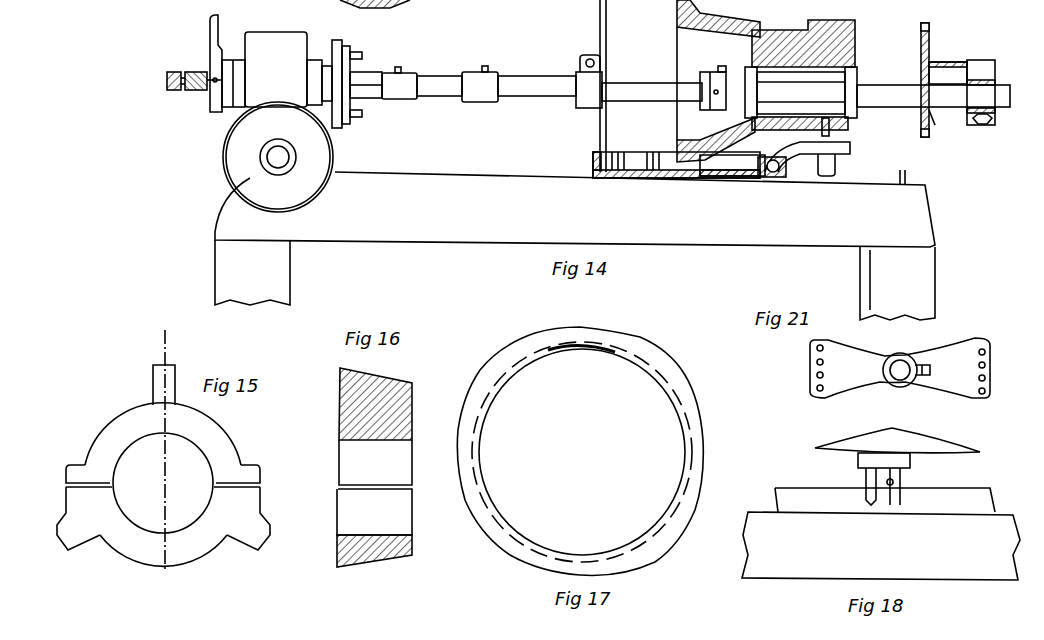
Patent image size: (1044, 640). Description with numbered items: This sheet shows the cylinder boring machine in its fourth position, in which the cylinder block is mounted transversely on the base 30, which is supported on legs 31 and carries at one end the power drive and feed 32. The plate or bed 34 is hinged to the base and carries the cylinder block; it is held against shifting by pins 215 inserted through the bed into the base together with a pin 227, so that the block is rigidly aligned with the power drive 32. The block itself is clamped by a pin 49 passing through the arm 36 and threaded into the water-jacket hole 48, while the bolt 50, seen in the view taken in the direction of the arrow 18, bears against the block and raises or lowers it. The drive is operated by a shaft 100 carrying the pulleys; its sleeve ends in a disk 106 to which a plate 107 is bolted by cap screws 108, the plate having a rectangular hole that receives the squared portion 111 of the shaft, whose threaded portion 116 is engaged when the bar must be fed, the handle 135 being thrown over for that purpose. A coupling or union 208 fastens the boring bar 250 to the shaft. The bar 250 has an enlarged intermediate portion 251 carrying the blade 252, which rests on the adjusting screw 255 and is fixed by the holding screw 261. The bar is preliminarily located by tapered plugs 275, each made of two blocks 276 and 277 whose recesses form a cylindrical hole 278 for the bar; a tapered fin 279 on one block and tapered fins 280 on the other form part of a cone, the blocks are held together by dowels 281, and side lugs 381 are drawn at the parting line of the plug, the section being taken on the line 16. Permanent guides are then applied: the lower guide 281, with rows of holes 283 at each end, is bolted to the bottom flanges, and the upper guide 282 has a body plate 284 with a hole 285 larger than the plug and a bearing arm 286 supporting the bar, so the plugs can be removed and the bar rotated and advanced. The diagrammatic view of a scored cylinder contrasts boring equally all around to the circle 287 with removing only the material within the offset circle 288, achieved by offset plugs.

In FIG. 15, the section line 16 is at (164, 446).
In FIG. 14, the arrow 18 is at (958, 162).
In FIG. 14, the base 30 is at (575, 245).
In FIG. 18, the base 30 is at (881, 546).
In FIG. 14, the legs 31 is at (887, 280).
In FIG. 14, the power drive and feed 32 is at (277, 69).
In FIG. 14, the plate or bed 34 is at (592, 160).
In FIG. 18, the plate or bed 34 is at (885, 500).
In FIG. 14, the arm 36 is at (850, 148).
In FIG. 18, the arm 36 is at (815, 450).
In FIG. 14, the hole 48 is at (830, 128).
In FIG. 14, the pin 49 is at (835, 165).
In FIG. 18, the pin 49 is at (866, 475).
In FIG. 18, the bolt 50 is at (900, 473).
In FIG. 14, the shaft 100 is at (262, 157).
In FIG. 14, the disk 106 is at (335, 40).
In FIG. 14, the plate 107 is at (362, 55).
In FIG. 14, the cap screws 108 is at (362, 114).
In FIG. 14, the squared portion 111 is at (370, 72).
In FIG. 14, the threaded portion 116 is at (172, 90).
In FIG. 14, the handle 135 is at (210, 30).
In FIG. 14, the coupling or union 208 is at (440, 77).
In FIG. 14, the pins 215 is at (615, 152).
In FIG. 14, the pin 227 is at (652, 152).
In FIG. 14, the boring bar 250 is at (890, 85).
In FIG. 14, the enlarged intermediate portion 251 is at (740, 110).
In FIG. 14, the blade 252 is at (715, 72).
In FIG. 14, the screw 255 is at (398, 5).
In FIG. 14, the holding screw 261 is at (312, 10).
In FIG. 14, the tapered plugs 275 is at (755, 67).
In FIG. 15, the tapered plugs 275 is at (227, 438).
In FIG. 16, the tapered plugs 275 is at (412, 388).
In FIG. 15, the block 276 is at (112, 435).
In FIG. 15, the block 277 is at (113, 540).
In FIG. 16, the block 277 is at (412, 548).
In FIG. 15, the cylindrical hole 278 is at (163, 483).
In FIG. 15, the tapered fin 279 is at (175, 372).
In FIG. 15, the tapered fins 280 is at (62, 540).
In FIG. 14, the dowels / permanent guide 281 is at (606, 12).
In FIG. 16, the dowels / permanent guide 281 is at (375, 487).
In FIG. 21, the dowels / permanent guide 281 is at (955, 390).
In FIG. 14, the permanent guide 282 is at (950, 62).
In FIG. 21, the holes 283 is at (820, 392).
In FIG. 14, the body plate 284 is at (929, 30).
In FIG. 14, the hole 285 is at (944, 128).
In FIG. 14, the bearing arm 286 is at (980, 60).
In FIG. 17, the circle 287 is at (688, 452).
In FIG. 17, the circle 288 is at (690, 430).
In FIG. 15, the lug 381 is at (66, 473).